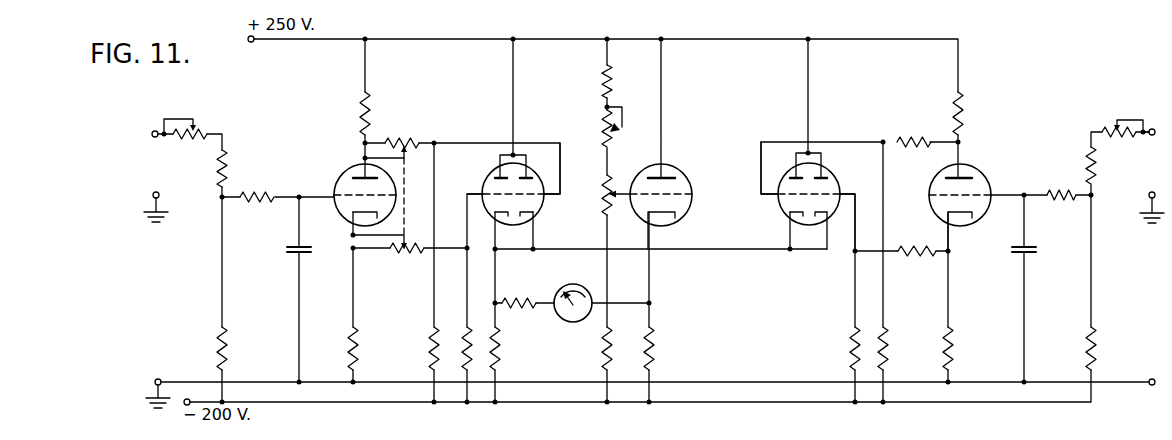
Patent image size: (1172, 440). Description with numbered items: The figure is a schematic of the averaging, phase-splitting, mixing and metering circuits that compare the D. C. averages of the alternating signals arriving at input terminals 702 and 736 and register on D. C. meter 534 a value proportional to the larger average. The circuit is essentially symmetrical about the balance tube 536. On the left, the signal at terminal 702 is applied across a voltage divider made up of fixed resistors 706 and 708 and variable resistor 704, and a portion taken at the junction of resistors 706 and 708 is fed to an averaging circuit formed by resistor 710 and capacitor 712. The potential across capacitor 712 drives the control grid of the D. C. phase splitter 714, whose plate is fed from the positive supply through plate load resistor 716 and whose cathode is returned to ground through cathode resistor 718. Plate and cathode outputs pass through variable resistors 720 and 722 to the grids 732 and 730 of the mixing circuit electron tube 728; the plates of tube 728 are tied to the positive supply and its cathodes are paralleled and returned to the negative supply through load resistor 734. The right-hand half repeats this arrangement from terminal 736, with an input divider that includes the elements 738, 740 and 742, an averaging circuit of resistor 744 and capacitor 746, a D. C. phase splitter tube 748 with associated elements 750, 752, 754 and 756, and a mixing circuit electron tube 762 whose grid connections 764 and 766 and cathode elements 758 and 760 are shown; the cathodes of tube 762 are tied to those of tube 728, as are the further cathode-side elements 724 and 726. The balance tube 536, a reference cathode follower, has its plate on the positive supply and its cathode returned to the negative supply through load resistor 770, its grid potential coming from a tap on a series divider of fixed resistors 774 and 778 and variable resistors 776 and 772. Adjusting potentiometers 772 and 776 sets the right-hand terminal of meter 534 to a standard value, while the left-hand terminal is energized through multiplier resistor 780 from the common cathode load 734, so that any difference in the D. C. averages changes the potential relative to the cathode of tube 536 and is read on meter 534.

The input terminal 702 is at (153, 132).
The variable resistor 704 is at (210, 110).
The fixed resistor 706 is at (225, 178).
The fixed resistor 708 is at (226, 352).
The resistor 710 is at (257, 200).
The capacitor 712 is at (290, 250).
The D. C. phase splitter 714 is at (344, 184).
The plate load resistor 716 is at (370, 117).
The cathode resistor 718 is at (348, 347).
The variable resistor 720 is at (395, 137).
The variable resistor 722 is at (420, 254).
The resistor 724 is at (429, 355).
The resistor 726 is at (462, 342).
The mixing circuit electron tube 728 is at (489, 176).
The grid 730 is at (478, 193).
The grid 732 is at (560, 196).
The load resistor 734 is at (502, 347).
The multiplier resistor 780 is at (522, 298).
The D. C. meter 534 is at (572, 320).
The fixed resistor 778 is at (604, 344).
The fixed resistor 774 is at (611, 86).
The variable resistor 776 is at (618, 131).
The variable resistor 772 is at (610, 185).
The balance tube 536 is at (677, 171).
The load resistor 770 is at (658, 346).
The grid lead 766 is at (771, 197).
The mixing circuit electron tube 762 is at (828, 172).
The grid lead 764 is at (845, 197).
The resistor 760 is at (850, 345).
The resistor 758 is at (889, 350).
The resistor 756 is at (915, 256).
The resistor 754 is at (901, 138).
The resistor 750 is at (963, 116).
The D. C. phase splitter tube 748 is at (986, 185).
The resistor 752 is at (954, 350).
The resistor 744 is at (1052, 200).
The capacitor 746 is at (1038, 251).
The resistor 740 is at (1086, 166).
The potentiometer 738 is at (1113, 121).
The input terminal 736 is at (1152, 138).
The resistor 742 is at (1099, 350).